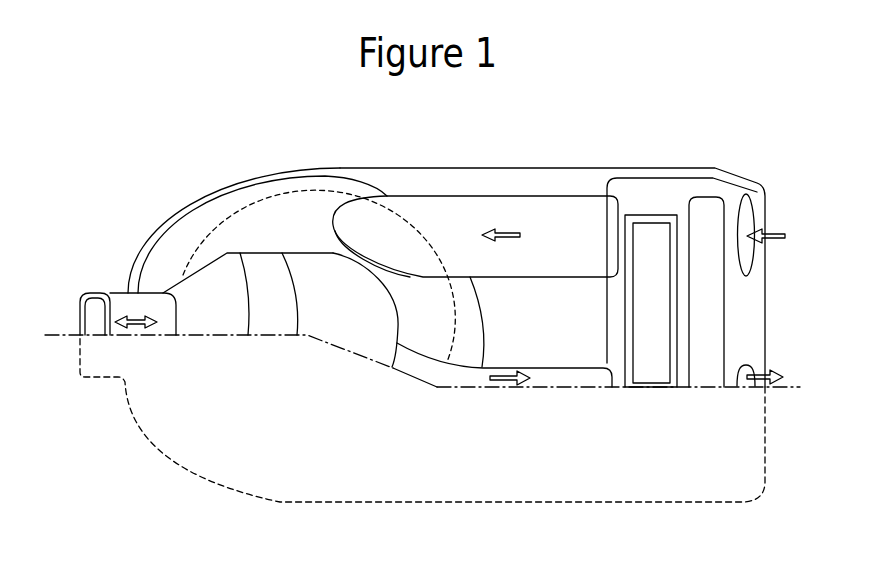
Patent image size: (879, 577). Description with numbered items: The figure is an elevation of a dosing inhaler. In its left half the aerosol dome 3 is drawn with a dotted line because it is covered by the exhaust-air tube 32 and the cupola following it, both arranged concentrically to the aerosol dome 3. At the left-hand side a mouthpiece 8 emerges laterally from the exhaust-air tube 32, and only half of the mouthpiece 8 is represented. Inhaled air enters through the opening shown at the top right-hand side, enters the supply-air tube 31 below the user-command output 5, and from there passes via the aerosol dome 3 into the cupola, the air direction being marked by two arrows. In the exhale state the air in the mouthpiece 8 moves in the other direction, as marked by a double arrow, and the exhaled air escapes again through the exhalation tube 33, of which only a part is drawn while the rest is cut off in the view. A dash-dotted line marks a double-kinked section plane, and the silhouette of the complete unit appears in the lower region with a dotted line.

The aerosol dome 3 is at (253, 238).
The exhaust-air tube 32 is at (303, 267).
The supply-air tube 31 is at (435, 213).
The exhalation tube 33 is at (570, 378).
The mouthpiece 8 is at (137, 312).
The user-command output 5 is at (653, 222).